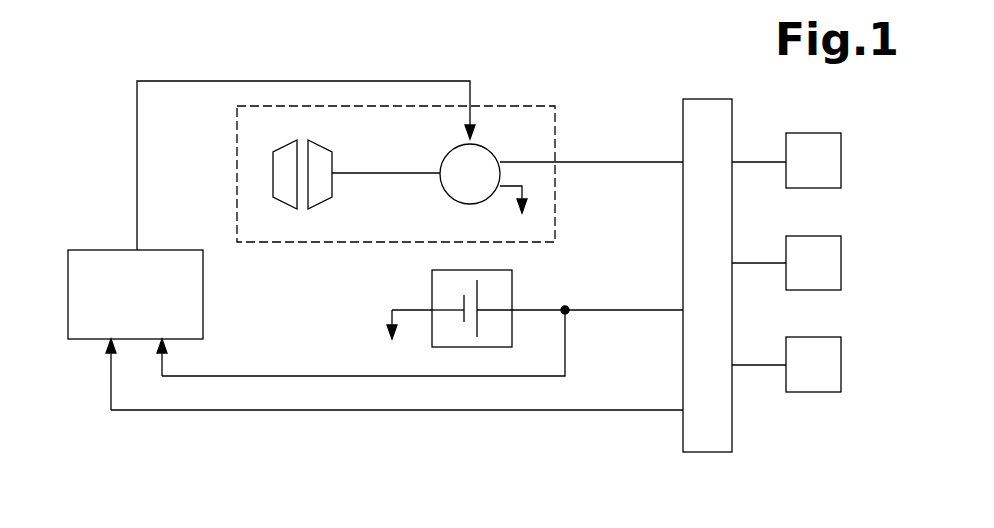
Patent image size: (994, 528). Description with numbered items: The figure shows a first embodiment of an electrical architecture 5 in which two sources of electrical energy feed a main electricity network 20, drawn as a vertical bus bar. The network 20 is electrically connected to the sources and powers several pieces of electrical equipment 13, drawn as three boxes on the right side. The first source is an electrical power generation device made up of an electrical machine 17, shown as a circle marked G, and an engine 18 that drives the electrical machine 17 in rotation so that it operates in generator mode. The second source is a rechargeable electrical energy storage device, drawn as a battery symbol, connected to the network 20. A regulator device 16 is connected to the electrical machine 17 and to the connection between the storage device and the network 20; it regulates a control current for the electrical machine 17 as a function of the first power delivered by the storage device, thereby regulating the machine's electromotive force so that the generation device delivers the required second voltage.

The electrical architecture 5 is at (343, 434).
The pieces of electrical equipment 13 is at (841, 354).
The regulator device 16 is at (101, 250).
The electrical machine 17 is at (485, 143).
The engine 18 is at (322, 153).
The main electricity network 20 is at (683, 428).